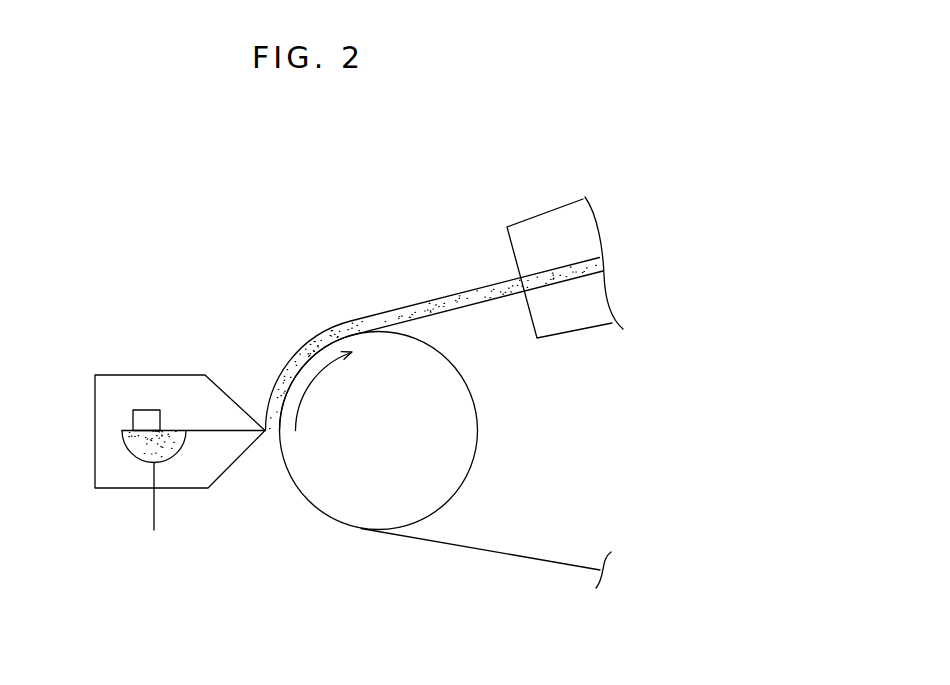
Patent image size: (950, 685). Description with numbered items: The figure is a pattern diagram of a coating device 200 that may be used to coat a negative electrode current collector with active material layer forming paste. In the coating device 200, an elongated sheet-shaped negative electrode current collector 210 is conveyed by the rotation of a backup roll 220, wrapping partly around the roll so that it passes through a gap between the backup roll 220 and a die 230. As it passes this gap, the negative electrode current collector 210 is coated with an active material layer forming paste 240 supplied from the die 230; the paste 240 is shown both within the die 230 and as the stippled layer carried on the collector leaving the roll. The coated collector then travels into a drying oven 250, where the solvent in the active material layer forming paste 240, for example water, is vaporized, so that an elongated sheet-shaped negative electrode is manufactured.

The coating device 200 is at (127, 199).
The negative electrode current collector 210 is at (497, 552).
The backup roll 220 is at (463, 433).
The die 230 is at (163, 375).
The active material layer forming paste 240 is at (408, 303).
The drying oven 250 is at (548, 212).